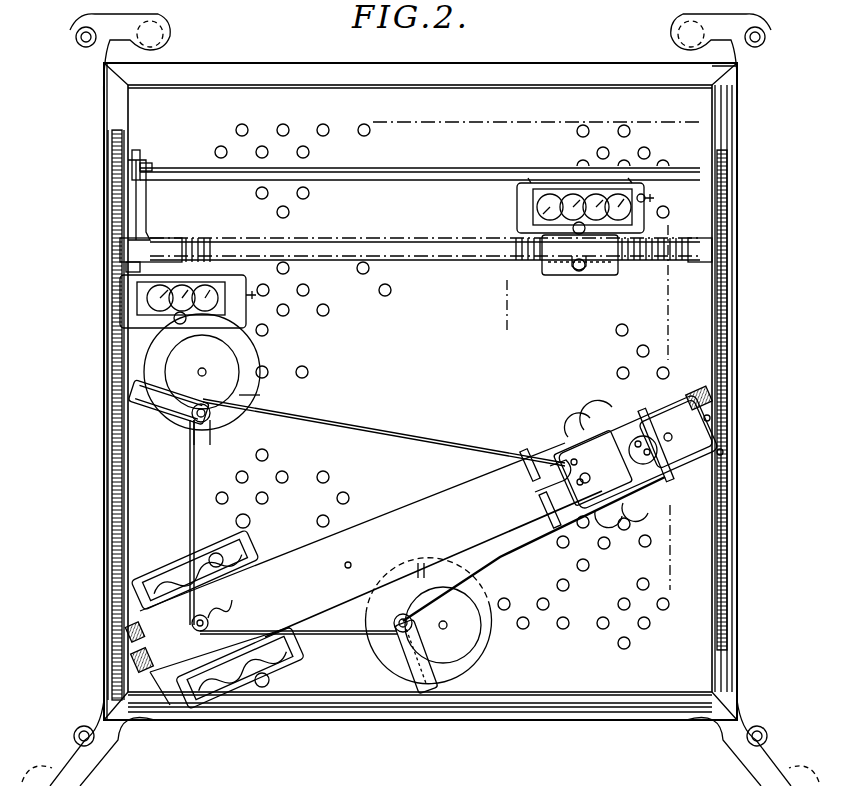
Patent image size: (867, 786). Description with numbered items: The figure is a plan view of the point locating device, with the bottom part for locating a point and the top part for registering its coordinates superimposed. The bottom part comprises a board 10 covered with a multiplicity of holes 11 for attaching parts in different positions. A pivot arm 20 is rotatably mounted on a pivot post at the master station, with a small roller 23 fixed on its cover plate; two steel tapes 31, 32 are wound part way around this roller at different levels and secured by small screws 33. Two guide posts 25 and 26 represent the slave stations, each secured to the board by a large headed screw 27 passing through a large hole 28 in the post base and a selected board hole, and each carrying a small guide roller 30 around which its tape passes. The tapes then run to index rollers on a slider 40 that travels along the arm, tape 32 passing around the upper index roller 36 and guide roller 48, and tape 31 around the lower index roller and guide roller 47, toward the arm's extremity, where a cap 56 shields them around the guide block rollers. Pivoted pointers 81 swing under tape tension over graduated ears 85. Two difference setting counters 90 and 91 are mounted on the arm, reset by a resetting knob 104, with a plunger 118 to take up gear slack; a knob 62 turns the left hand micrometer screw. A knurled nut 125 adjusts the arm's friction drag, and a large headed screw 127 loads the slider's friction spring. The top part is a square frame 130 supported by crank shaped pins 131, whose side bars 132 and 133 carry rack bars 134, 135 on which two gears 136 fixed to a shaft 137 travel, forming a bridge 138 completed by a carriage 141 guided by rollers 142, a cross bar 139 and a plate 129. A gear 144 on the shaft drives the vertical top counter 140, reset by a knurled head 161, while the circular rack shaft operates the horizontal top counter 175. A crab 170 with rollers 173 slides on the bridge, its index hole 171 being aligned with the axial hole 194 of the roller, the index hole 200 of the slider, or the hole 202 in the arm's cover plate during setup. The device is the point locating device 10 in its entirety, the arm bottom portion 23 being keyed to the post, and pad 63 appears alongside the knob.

The board 10 is at (721, 363).
The holes 11 is at (310, 210).
The pivot arm 20 is at (379, 509).
The small roller 23 is at (220, 666).
The guide post 25 is at (160, 424).
The guide post 26 is at (400, 680).
The large headed screw 27 is at (224, 362).
The large hole 28 is at (236, 422).
The guide roller 30 is at (208, 426).
The steel tape 31 is at (366, 430).
The steel tape 32 is at (300, 638).
The small screws 33 is at (220, 608).
The upper index roller 36 is at (592, 468).
The slider 40 is at (540, 490).
The guide roller 47 is at (542, 508).
The guide roller 48 is at (552, 460).
The cap 56 is at (692, 426).
The knob 62 is at (128, 634).
The pad 63 is at (130, 659).
The pointers 81 is at (582, 422).
The ears 85 is at (602, 414).
The station A difference setting counter 90 is at (159, 550).
The station B difference setting counter 91 is at (274, 698).
The resetting knob 104 is at (178, 545).
The plunger 118 is at (651, 196).
The knurled nut 125 is at (710, 396).
The large headed screw 127 is at (634, 446).
The plate 129 is at (728, 188).
The square frame 130 is at (492, 722).
The crank shaped pins 131 is at (678, 36).
The side bar 132 is at (104, 463).
The side bar 133 is at (737, 478).
The rack bar 134 is at (118, 192).
The rack bar 135 is at (735, 298).
The gears 136 is at (120, 264).
The shaft 137 is at (656, 264).
The bridge 138 is at (434, 269).
The cross bar 139 is at (472, 166).
The vertical top counter 140 is at (250, 320).
The carriage 141 is at (146, 210).
The rollers 142 is at (140, 150).
The gear 144 is at (142, 270).
The knurled head 161 is at (176, 322).
The crab 170 is at (537, 281).
The index hole 171 is at (578, 272).
The rollers 173 is at (530, 182).
The horizontal top counter 175 is at (509, 204).
The axial hole 194 is at (194, 627).
The index hole 200 is at (592, 477).
The hole 202 is at (344, 565).